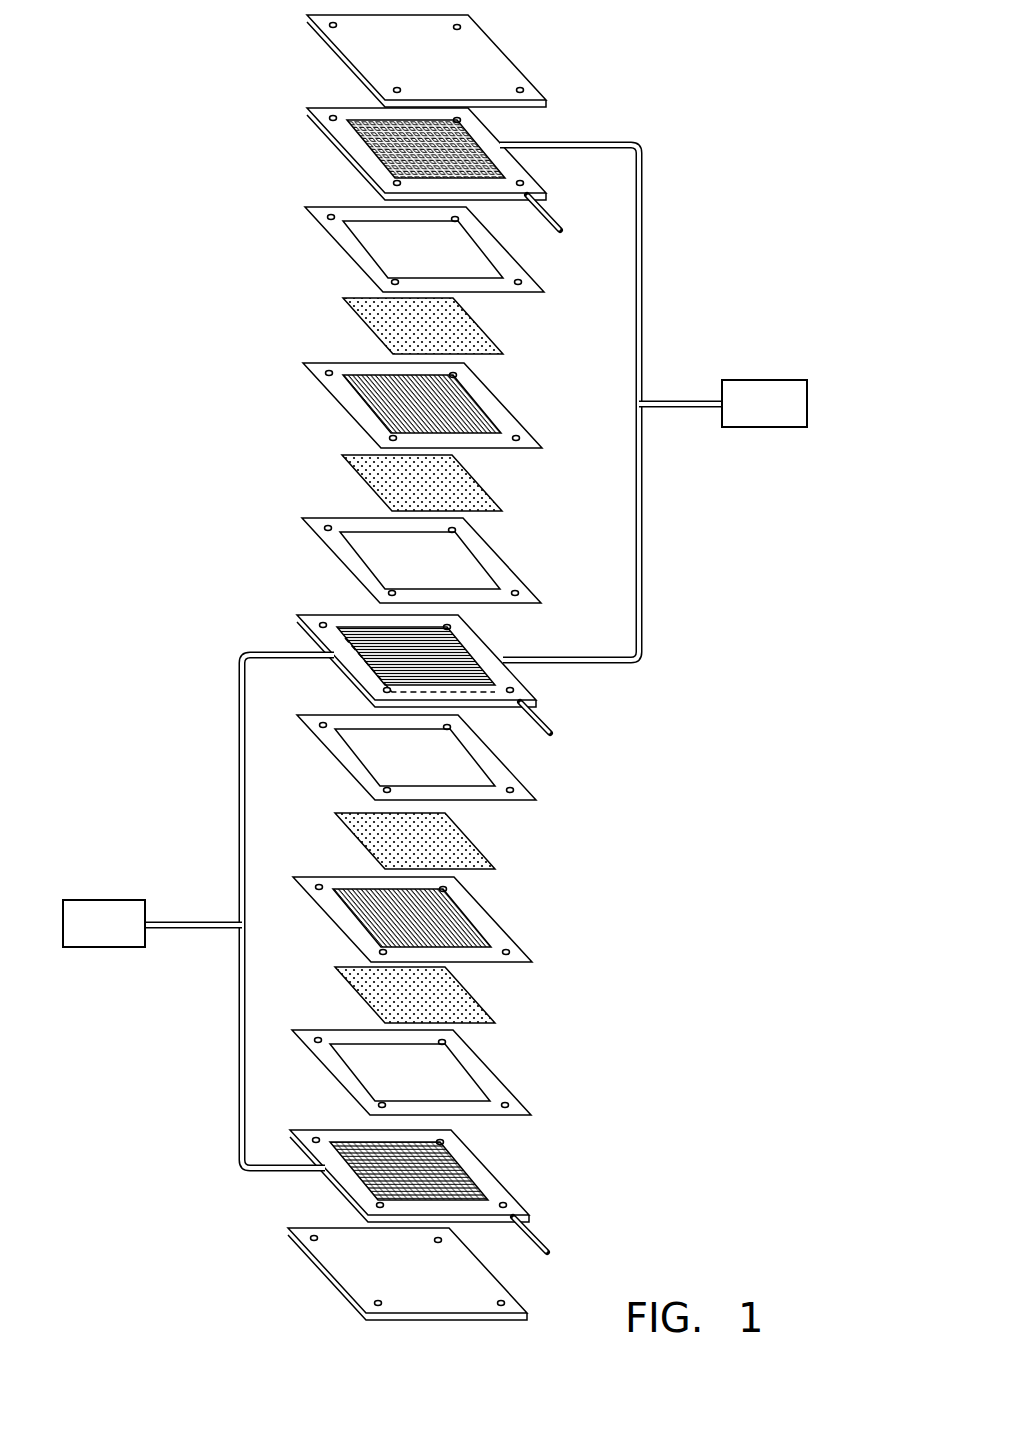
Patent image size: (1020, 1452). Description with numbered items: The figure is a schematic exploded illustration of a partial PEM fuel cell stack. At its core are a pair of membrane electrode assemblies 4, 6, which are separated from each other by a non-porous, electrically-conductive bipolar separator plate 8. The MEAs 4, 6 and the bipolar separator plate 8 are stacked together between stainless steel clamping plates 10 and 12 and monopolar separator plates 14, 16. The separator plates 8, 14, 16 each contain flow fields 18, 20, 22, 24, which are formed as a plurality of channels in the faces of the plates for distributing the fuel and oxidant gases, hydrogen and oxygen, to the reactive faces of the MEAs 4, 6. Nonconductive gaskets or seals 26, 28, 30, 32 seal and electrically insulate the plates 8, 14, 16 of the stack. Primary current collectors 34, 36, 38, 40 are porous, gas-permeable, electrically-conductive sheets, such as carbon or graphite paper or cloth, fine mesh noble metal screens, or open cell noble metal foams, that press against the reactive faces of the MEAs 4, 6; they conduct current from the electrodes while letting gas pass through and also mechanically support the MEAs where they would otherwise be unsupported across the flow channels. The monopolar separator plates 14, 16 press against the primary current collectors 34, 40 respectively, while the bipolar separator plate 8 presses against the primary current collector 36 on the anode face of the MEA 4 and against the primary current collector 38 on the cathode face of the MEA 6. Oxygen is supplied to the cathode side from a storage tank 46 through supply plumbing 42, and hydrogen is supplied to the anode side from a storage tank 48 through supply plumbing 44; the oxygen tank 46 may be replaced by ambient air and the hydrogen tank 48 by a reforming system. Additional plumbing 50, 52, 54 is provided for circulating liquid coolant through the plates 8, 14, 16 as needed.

The membrane electrode assembly 4 is at (342, 398).
The membrane electrode assembly 6 is at (494, 908).
The bipolar separator plate 8 is at (382, 649).
The clamping plate 10 is at (352, 61).
The clamping plate 12 is at (506, 1284).
The monopolar separator plate 14 is at (377, 154).
The monopolar separator plate 16 is at (448, 1176).
The flow field 18 is at (375, 152).
The flow field 20 is at (448, 643).
The flow field 22 is at (378, 675).
The flow field 24 is at (467, 1185).
The nonconductive gasket 26 is at (347, 240).
The nonconductive gasket 28 is at (335, 550).
The nonconductive gasket 30 is at (513, 780).
The nonconductive gasket 32 is at (492, 1072).
The primary current collector 34 is at (372, 315).
The primary current collector 36 is at (372, 468).
The primary current collector 38 is at (460, 833).
The primary current collector 40 is at (465, 998).
The supply plumbing 42 is at (641, 518).
The supply plumbing 44 is at (236, 1000).
The oxygen storage tank 46 is at (792, 387).
The hydrogen storage tank 48 is at (73, 905).
The coolant plumbing 50 is at (552, 217).
The coolant plumbing 52 is at (547, 727).
The coolant plumbing 54 is at (533, 1233).